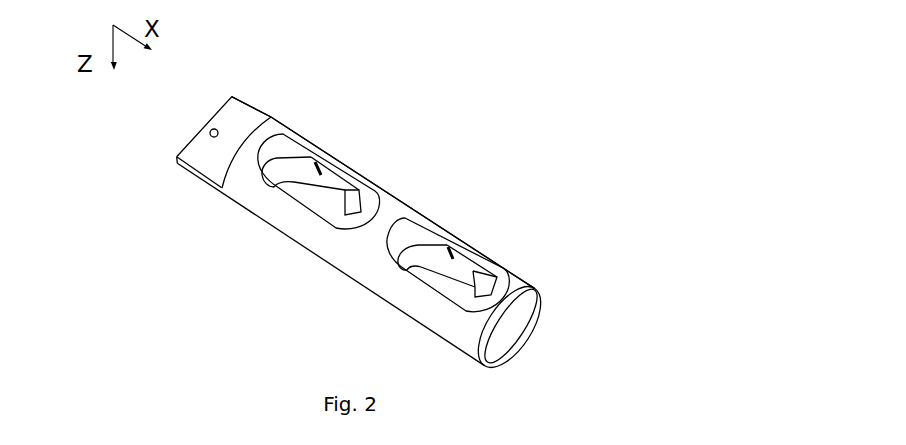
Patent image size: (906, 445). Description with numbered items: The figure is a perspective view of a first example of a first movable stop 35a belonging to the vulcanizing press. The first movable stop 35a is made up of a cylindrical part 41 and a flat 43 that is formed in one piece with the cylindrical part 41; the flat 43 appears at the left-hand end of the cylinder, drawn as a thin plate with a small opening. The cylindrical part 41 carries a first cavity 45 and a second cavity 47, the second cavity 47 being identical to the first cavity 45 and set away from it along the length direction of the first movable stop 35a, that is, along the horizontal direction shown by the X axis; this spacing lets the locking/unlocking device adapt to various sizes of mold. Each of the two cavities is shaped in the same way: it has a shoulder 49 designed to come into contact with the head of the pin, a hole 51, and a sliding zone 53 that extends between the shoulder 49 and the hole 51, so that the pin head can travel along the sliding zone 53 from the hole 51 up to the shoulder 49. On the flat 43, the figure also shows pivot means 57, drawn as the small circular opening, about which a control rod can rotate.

The first movable stop 35a is at (488, 125).
The cylindrical part 41 is at (385, 96).
The flat 43 is at (153, 145).
The first cavity 45 is at (426, 286).
The second cavity 47 is at (297, 201).
The shoulder 49 is at (420, 245).
The hole 51 is at (479, 297).
The sliding zone 53 is at (459, 255).
The pivot means 57 is at (218, 130).